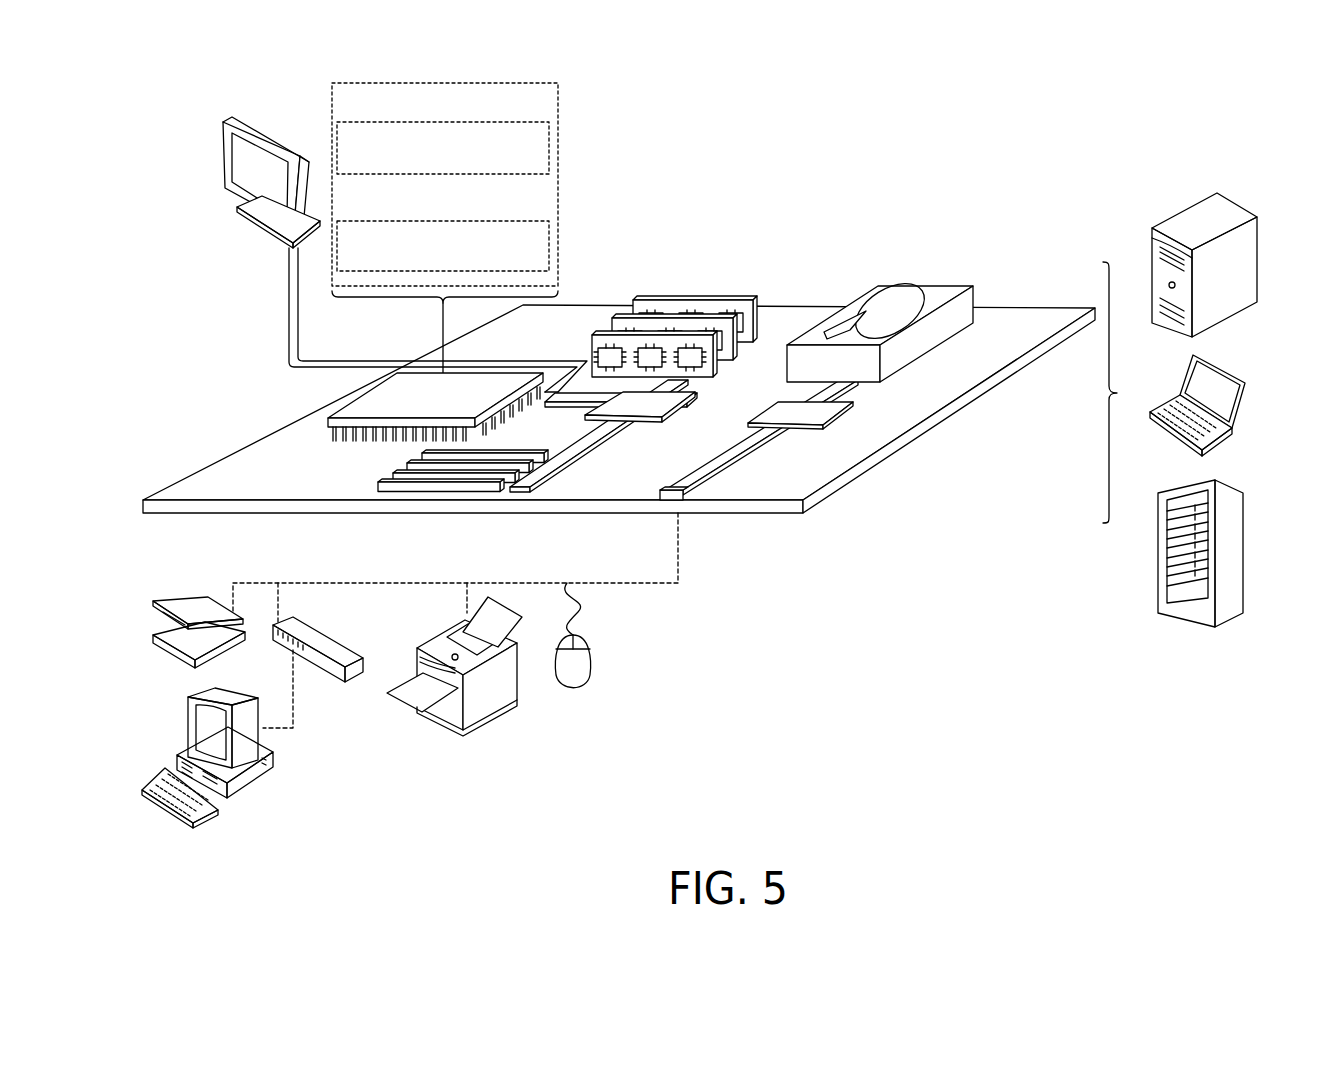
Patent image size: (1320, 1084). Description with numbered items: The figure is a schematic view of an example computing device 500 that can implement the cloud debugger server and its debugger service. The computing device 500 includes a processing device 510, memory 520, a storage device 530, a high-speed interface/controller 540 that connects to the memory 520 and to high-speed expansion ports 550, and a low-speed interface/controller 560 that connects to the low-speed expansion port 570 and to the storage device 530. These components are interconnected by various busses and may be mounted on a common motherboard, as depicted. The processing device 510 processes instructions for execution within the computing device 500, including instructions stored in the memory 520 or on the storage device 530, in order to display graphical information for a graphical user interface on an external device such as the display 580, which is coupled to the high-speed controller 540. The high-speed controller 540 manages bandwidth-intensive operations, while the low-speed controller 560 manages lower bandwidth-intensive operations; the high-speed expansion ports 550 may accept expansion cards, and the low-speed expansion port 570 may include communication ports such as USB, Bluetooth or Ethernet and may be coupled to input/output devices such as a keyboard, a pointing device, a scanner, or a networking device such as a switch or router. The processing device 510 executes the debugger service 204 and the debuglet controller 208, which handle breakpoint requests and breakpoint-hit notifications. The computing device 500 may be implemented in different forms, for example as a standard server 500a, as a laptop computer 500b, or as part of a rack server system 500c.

The debugger service 204 is at (443, 123).
The debuglet controller 208 is at (443, 221).
The computing device 500 is at (764, 174).
The standard server 500a is at (1177, 210).
The laptop computer 500b is at (1232, 377).
The rack server system 500c is at (1238, 535).
The processing device 510 is at (327, 418).
The memory 520 is at (691, 300).
The storage device 530 is at (921, 285).
The high-speed interface/controller 540 is at (645, 423).
The high-speed expansion ports 550 is at (380, 483).
The low-speed interface/controller 560 is at (793, 403).
The low-speed expansion port 570 is at (683, 503).
The display 580 is at (223, 165).